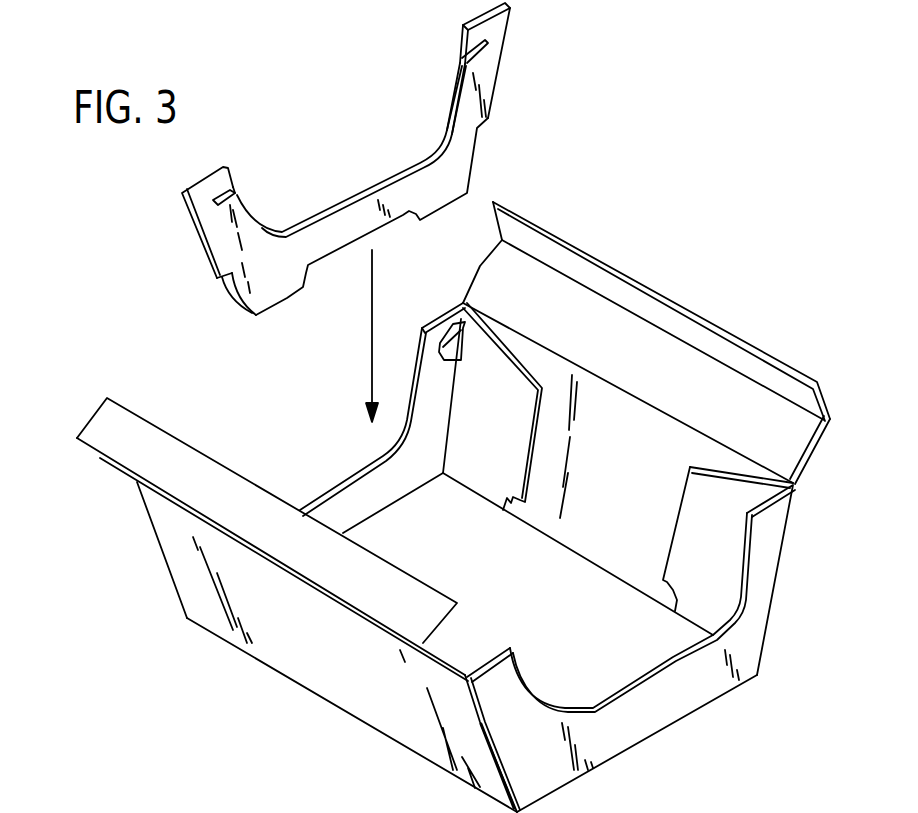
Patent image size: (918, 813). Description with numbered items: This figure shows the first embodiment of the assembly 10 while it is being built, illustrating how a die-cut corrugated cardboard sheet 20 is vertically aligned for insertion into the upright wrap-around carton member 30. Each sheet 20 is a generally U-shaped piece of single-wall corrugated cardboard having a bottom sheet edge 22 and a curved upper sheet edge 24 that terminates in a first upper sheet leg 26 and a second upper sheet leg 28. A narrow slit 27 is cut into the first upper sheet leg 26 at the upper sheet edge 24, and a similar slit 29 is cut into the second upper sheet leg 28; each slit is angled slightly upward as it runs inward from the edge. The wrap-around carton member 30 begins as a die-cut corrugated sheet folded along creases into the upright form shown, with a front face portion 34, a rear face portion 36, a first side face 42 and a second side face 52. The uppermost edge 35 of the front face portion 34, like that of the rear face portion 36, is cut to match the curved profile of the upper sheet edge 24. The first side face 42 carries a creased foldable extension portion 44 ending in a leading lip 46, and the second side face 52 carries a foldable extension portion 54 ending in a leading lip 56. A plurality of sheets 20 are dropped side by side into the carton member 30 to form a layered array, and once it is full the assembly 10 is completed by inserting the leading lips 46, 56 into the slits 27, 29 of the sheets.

The assembly 10 is at (714, 224).
The corrugated cardboard sheet 20 is at (462, 147).
The bottom sheet edge 22 is at (333, 253).
The upper sheet edge 24 is at (413, 169).
The first upper sheet leg 26 is at (202, 193).
The slit 27 is at (237, 190).
The second upper sheet leg 28 is at (497, 28).
The slit 29 is at (463, 62).
The wrap-around carton member 30 is at (743, 658).
The front face portion 34 is at (610, 737).
The uppermost edge 35 is at (675, 668).
The rear face portion 36 is at (378, 488).
The first side face 42 is at (272, 628).
The foldable extension portion 44 is at (360, 812).
The leading lip 46 is at (173, 435).
The second side face 52 is at (632, 540).
The foldable extension portion 54 is at (795, 445).
The leading lip 56 is at (575, 243).